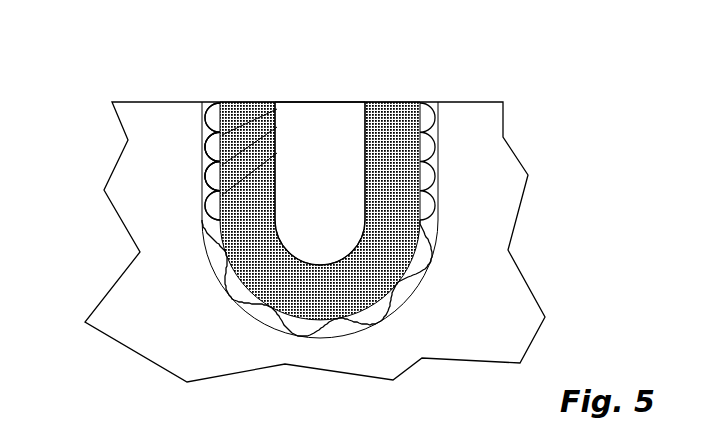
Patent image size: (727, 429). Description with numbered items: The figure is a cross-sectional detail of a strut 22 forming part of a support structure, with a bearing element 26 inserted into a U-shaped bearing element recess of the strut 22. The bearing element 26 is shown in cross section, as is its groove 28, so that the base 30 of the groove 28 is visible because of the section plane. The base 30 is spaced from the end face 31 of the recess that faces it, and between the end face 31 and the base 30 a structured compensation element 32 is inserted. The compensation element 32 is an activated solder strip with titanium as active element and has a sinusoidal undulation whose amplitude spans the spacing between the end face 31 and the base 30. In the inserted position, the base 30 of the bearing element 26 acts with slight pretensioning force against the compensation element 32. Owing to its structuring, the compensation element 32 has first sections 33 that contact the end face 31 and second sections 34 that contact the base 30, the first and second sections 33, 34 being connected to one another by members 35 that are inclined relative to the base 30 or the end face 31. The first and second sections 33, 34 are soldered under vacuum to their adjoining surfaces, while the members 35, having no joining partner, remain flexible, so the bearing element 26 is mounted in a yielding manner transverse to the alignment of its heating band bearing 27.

The strut 22 is at (166, 307).
The bearing element 26 is at (258, 99).
The heating band bearing 27 is at (331, 191).
The groove 28 is at (218, 102).
The base 30 is at (424, 146).
The end face 31 is at (421, 102).
The compensation element 32 is at (430, 268).
The first sections 33 is at (199, 237).
The second sections 34 is at (277, 153).
The members 35 is at (199, 187).